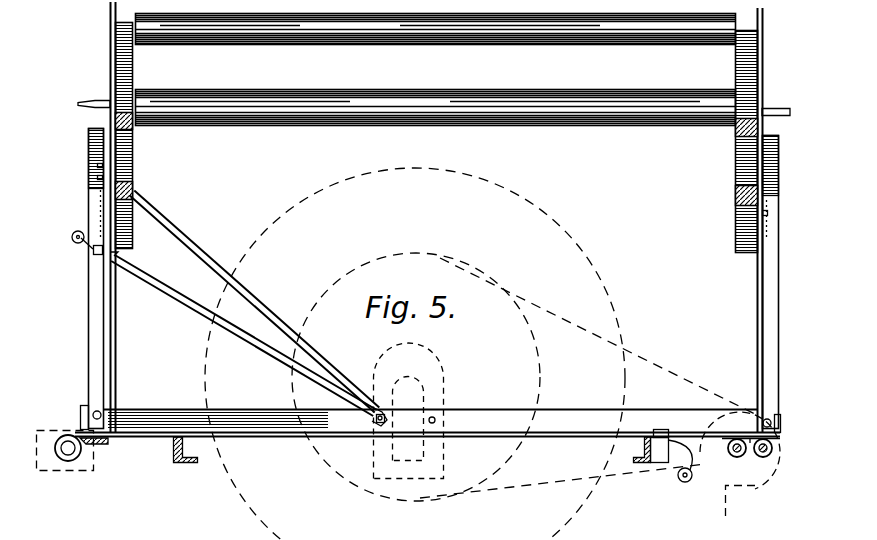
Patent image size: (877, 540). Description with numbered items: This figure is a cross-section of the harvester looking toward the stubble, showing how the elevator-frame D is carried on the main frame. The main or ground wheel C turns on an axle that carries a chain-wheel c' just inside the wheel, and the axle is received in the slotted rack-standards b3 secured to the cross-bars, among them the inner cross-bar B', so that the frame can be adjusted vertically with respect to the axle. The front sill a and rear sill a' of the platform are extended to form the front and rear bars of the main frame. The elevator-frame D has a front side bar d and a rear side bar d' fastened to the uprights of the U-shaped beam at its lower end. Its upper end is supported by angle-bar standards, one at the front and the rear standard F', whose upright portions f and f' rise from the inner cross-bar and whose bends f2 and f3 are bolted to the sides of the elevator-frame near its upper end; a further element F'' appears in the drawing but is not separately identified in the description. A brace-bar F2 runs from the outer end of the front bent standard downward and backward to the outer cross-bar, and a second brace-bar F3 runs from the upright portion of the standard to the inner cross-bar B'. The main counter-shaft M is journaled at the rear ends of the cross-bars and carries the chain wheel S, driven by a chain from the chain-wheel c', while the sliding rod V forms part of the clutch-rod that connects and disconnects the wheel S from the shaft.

The elevator-frame D is at (140, 68).
The front side bar d is at (101, 136).
The rear side bar d' is at (764, 142).
The upright portion of front standard f is at (78, 279).
The upright portion of rear standard f' is at (793, 333).
The bend of front standard f2 is at (90, 160).
The bend of rear standard f3 is at (778, 160).
The rear standard F' is at (84, 217).
The right frame post F'' is at (785, 220).
The brace-bar F2 is at (208, 262).
The brace-bar F3 is at (180, 308).
The inner cross-bar B' is at (427, 408).
The slotted rack-standard b3 is at (386, 358).
The chain-wheel c' is at (524, 366).
The main or ground wheel C is at (612, 308).
The front sill a is at (180, 465).
The rear sill a' is at (651, 467).
The main counter-shaft M is at (741, 457).
The rod V is at (772, 455).
The chain wheel or pinion S is at (740, 471).